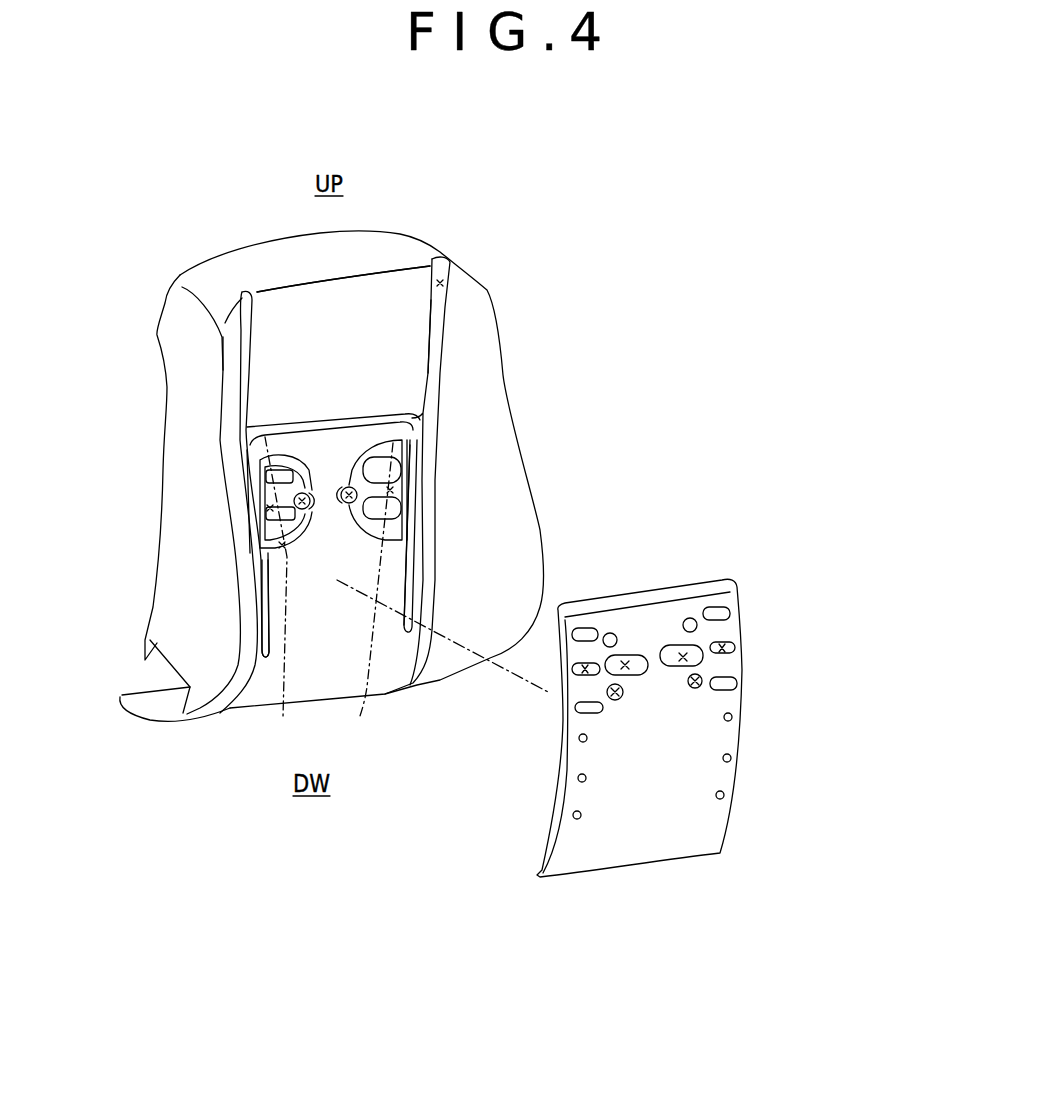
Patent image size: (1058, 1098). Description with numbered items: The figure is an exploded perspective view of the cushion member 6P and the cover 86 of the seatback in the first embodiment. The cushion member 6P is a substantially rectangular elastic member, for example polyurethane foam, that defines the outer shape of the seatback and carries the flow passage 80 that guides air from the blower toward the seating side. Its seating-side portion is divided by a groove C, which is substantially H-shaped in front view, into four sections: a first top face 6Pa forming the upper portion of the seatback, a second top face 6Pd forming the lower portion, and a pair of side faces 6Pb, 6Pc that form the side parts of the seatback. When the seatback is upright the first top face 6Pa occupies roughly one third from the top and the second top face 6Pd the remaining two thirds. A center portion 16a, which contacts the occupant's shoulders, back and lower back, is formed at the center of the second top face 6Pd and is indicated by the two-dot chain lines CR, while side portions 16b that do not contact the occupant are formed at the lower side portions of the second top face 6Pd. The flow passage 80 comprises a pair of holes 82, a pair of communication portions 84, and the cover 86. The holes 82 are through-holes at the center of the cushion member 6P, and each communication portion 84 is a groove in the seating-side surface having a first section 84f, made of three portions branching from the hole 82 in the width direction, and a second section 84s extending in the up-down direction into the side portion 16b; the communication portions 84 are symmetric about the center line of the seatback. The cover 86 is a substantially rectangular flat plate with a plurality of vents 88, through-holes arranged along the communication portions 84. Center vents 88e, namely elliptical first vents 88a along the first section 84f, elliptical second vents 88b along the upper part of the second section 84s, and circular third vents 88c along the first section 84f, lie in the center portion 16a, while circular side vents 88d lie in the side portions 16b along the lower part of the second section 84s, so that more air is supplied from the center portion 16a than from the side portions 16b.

The cushion member 6P is at (434, 248).
The groove C is at (450, 283).
The first top face 6Pa is at (400, 312).
The side face 6Pb is at (470, 342).
The side face 6Pc is at (227, 382).
The second top face 6Pd is at (333, 447).
The center portion 16a is at (347, 653).
The side portion 16b is at (284, 700).
The two-dot chain line CR is at (362, 705).
The flow passage 80 is at (399, 499).
The hole 82 is at (262, 474).
The communication portion 84 is at (375, 515).
The first section 84f is at (268, 508).
The second section 84s is at (273, 577).
The cover 86 is at (632, 692).
The vent 88 is at (632, 712).
The first vent 88a is at (625, 665).
The second vent 88b is at (585, 670).
The third vent 88c is at (607, 693).
The side vent 88d is at (580, 740).
The center vent 88e is at (631, 697).